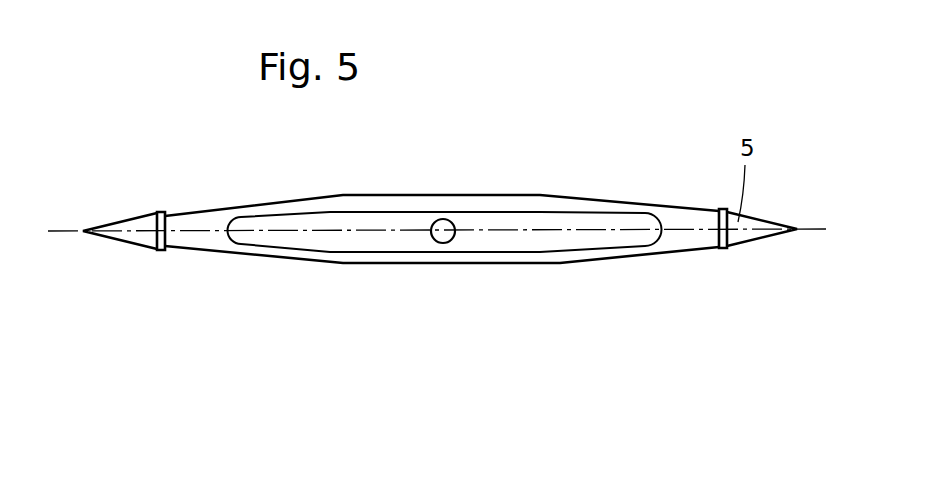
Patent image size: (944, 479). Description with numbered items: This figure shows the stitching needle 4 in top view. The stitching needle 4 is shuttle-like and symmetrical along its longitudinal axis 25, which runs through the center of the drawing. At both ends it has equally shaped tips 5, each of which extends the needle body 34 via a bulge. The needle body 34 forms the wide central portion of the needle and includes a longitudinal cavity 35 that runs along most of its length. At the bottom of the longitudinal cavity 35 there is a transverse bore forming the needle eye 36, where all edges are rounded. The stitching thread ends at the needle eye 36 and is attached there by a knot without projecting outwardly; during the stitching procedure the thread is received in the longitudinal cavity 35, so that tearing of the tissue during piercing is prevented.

The stitching needle 4 is at (398, 168).
The tips 5 is at (137, 215).
The longitudinal axis 25 is at (818, 228).
The needle body 34 is at (540, 208).
The longitudinal cavity 35 is at (566, 242).
The needle eye 36 is at (443, 240).